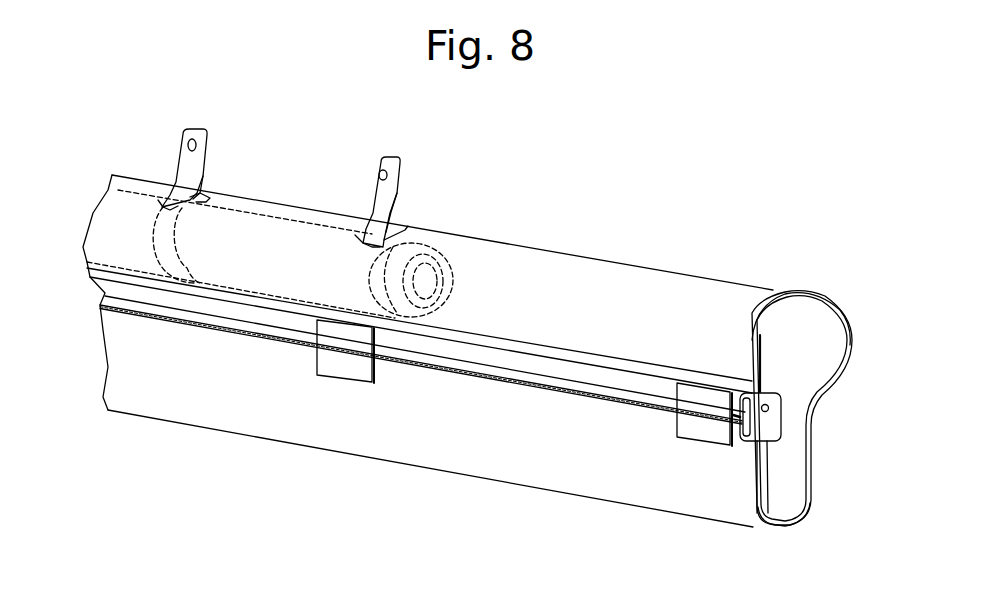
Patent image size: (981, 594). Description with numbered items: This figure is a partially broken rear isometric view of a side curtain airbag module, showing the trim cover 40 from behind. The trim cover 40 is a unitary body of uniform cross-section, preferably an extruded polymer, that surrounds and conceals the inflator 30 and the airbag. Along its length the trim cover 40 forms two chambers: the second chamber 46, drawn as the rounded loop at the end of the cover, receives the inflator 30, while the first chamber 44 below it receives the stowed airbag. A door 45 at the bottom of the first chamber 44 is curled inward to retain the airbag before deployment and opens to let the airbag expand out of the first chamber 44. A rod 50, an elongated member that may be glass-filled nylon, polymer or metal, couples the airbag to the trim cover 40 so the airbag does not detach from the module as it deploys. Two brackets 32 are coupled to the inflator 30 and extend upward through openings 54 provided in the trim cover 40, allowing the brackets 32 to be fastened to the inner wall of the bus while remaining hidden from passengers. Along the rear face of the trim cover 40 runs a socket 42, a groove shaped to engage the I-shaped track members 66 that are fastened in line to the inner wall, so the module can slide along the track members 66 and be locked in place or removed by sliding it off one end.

The inflator 30 is at (281, 217).
The brackets 32 is at (189, 141).
The trim cover 40 is at (633, 262).
The socket 42 is at (227, 333).
The first chamber 44 is at (798, 463).
The door 45 is at (803, 518).
The second chamber 46 is at (827, 340).
The rod 50 is at (775, 411).
The openings 54 is at (167, 196).
The track members 66 is at (350, 370).